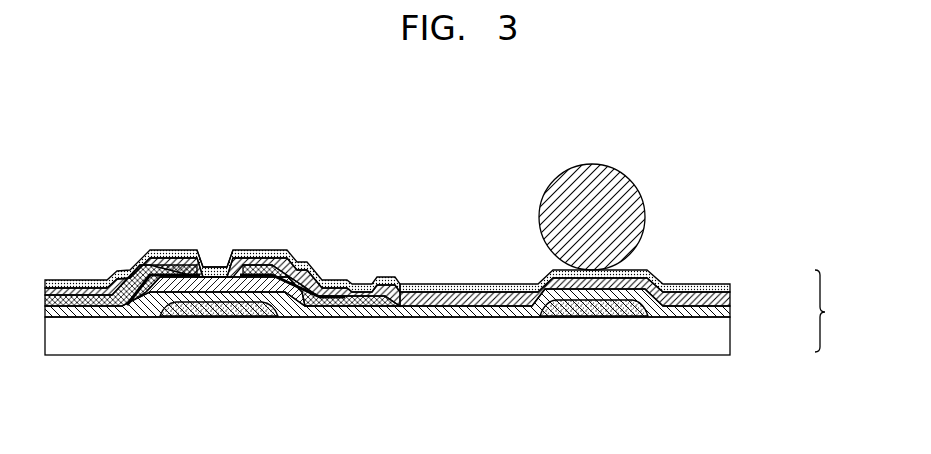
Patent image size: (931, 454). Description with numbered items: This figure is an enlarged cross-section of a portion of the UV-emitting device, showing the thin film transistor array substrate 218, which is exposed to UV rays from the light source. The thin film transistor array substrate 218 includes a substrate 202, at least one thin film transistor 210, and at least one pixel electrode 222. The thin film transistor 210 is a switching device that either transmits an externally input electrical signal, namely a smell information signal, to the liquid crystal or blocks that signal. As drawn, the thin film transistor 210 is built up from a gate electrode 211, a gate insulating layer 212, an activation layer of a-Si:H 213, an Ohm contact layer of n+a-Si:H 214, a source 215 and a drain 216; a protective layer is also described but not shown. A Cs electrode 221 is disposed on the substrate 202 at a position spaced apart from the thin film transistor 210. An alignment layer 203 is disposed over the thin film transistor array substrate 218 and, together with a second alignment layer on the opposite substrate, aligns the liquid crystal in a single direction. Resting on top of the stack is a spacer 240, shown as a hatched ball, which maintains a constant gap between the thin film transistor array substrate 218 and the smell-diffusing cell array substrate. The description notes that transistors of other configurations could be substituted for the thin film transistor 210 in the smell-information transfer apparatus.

The substrate 202 is at (730, 337).
The alignment layer 203 is at (730, 286).
The thin film transistor 210 is at (317, 200).
The gate electrode 211 is at (253, 300).
The gate insulating layer 212 is at (187, 294).
The activation layer of a-Si:H 213 is at (140, 273).
The Ohm contact layer of n+a-Si:H 214 is at (290, 258).
The source 215 is at (87, 290).
The drain 216 is at (222, 272).
The thin film transistor array substrate 218 is at (839, 311).
The Cs electrode 221 is at (592, 320).
The pixel electrode 222 is at (730, 294).
The spacer 240 is at (592, 164).